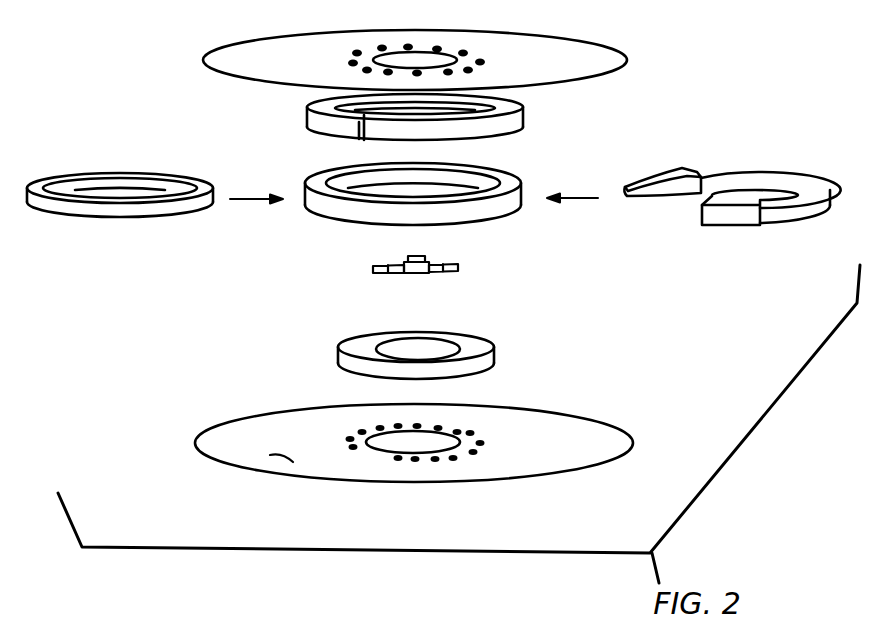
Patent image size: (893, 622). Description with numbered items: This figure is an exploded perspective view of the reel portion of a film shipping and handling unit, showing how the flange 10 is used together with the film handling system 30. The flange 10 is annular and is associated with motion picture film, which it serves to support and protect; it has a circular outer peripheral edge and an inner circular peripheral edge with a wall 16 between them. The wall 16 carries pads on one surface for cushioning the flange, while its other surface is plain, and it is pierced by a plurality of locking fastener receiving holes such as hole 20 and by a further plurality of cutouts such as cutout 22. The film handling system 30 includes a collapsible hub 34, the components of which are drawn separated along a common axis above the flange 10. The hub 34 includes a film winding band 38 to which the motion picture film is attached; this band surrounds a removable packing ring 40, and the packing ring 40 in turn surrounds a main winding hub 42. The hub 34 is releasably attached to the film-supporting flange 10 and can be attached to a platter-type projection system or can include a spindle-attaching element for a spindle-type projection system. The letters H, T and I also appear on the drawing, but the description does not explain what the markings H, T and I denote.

The flange 10 is at (599, 418).
The wall 16 is at (272, 456).
The locking fastener receiving hole 20 is at (415, 458).
The cutout 22 is at (377, 453).
The film handling system 30 is at (677, 348).
The collapsible hub 34 is at (576, 155).
The film winding band 38 is at (308, 129).
The removable packing ring 40 is at (106, 213).
The main winding hub 42 is at (482, 368).
The hub H is at (353, 275).
The element T is at (362, 306).
The element I is at (478, 308).